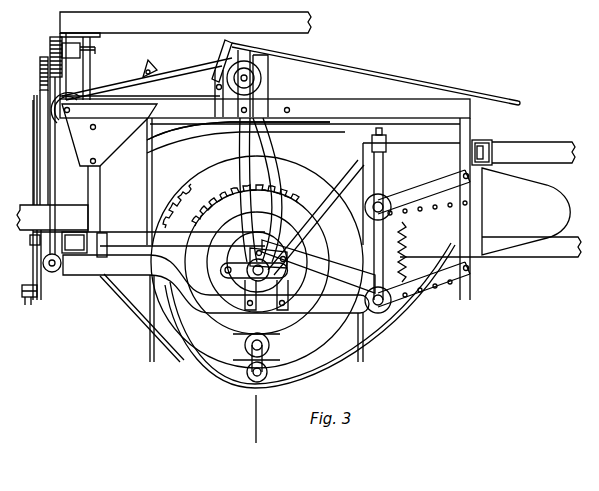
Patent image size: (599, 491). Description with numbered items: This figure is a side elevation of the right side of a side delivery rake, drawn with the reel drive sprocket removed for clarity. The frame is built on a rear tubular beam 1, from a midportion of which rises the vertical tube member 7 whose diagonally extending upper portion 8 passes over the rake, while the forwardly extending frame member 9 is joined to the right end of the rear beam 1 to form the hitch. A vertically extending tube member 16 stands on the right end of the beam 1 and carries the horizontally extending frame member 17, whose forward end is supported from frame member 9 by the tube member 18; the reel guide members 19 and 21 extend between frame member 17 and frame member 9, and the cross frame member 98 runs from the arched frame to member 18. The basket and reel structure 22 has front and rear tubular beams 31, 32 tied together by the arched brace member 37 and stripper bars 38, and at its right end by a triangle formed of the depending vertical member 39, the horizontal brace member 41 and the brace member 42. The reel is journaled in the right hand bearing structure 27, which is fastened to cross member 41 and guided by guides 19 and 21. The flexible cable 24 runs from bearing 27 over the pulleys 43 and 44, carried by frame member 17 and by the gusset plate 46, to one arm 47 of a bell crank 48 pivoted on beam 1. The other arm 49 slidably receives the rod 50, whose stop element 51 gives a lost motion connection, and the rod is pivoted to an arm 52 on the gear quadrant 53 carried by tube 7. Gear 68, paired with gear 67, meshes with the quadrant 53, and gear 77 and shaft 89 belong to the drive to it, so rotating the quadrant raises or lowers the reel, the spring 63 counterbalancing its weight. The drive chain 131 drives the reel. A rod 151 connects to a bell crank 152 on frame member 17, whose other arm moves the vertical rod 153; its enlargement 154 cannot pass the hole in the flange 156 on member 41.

The rear tubular beam 1 is at (82, 250).
The vertical tube member 7 is at (90, 67).
The diagonally horizontally extending upper portion 8 is at (312, 17).
The forwardly extending frame member 9 is at (524, 255).
The vertically extending tube member 16 is at (88, 191).
The horizontally extending frame member 17 is at (337, 106).
The tube member 18 is at (472, 137).
The reel guide member 19 is at (271, 174).
The reel guide member 21 is at (237, 174).
The basket and reel structure 22 is at (200, 385).
The flexible cable 24 is at (194, 74).
The reel bearing structure 27 is at (279, 272).
The front tubular beam 31 is at (386, 141).
The rear tubular beam 32 is at (107, 254).
The arched brace member 37 is at (170, 142).
The stripper bars 38 is at (133, 314).
The vertically extending member 39 is at (382, 178).
The horizontally extending brace member 41 is at (337, 263).
The brace member 42 is at (353, 168).
The pulley 43 is at (262, 79).
The pulley 44 is at (53, 122).
The gusset plate 46 is at (116, 104).
The arm of bell crank 47 is at (33, 199).
The bell crank 48 is at (30, 243).
The arm of bell crank 49 is at (41, 300).
The rod 50 is at (33, 268).
The stop element 51 is at (22, 299).
The arm 52 is at (35, 169).
The gear quadrant 53 is at (37, 101).
The spring 63 is at (52, 271).
The gear 67 is at (40, 86).
The gear 68 is at (40, 62).
The gear 77 is at (52, 38).
The shaft 89 is at (95, 50).
The cross frame member 98 is at (548, 143).
The drive chain 131 is at (437, 276).
The rod 151 is at (392, 63).
The bell crank 152 is at (184, 97).
The vertical rod 153 is at (149, 177).
The enlargement 154 is at (162, 248).
The flange 156 is at (195, 202).